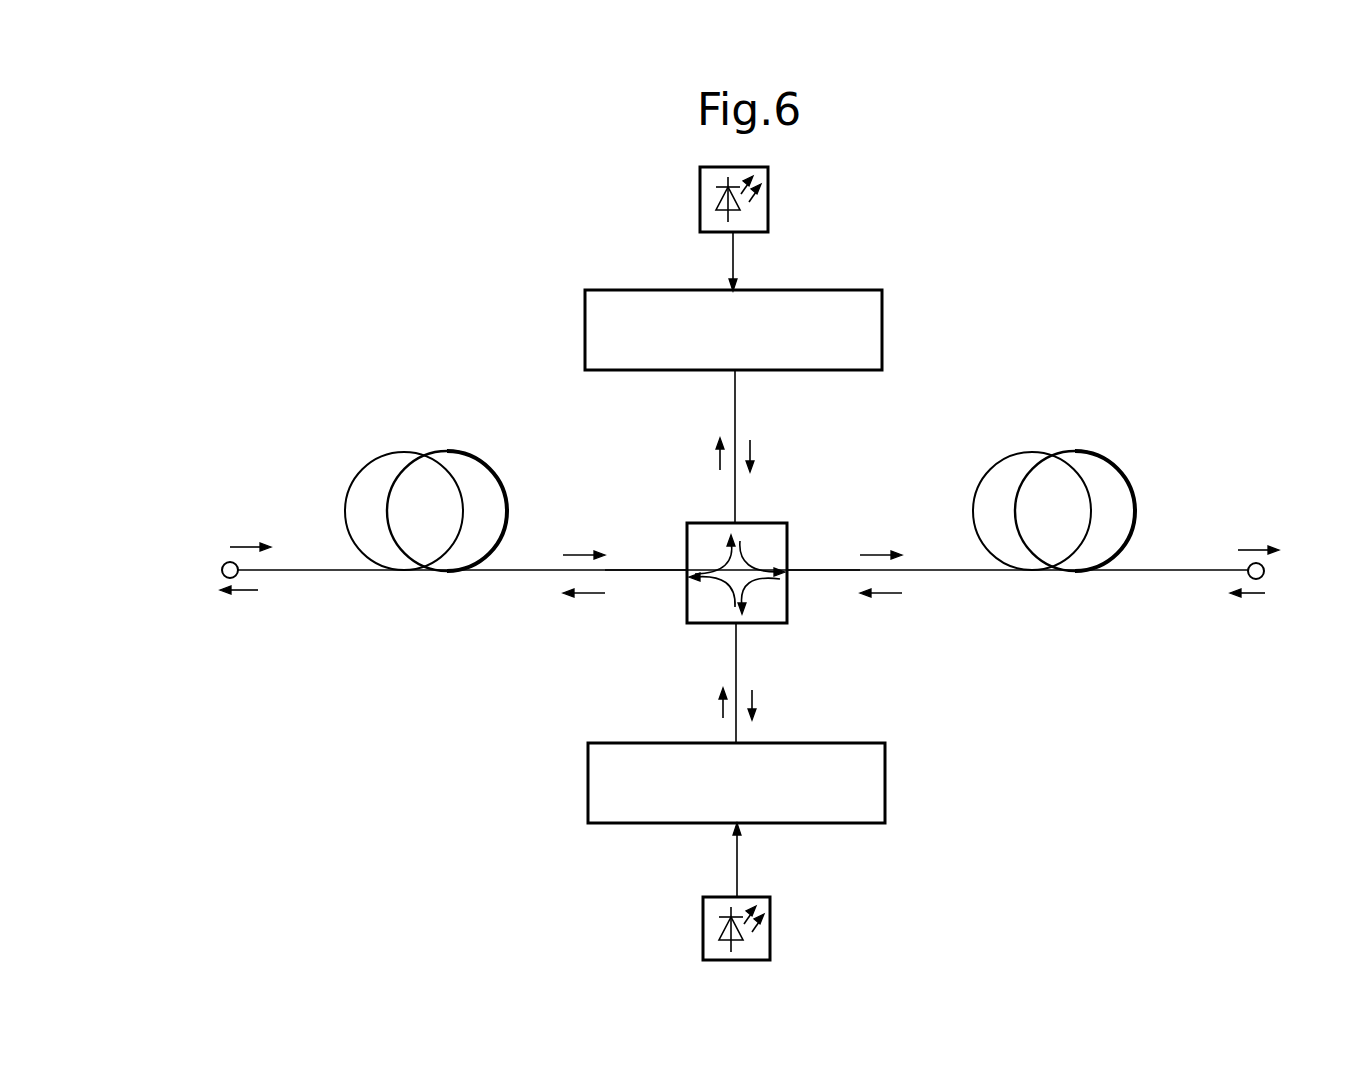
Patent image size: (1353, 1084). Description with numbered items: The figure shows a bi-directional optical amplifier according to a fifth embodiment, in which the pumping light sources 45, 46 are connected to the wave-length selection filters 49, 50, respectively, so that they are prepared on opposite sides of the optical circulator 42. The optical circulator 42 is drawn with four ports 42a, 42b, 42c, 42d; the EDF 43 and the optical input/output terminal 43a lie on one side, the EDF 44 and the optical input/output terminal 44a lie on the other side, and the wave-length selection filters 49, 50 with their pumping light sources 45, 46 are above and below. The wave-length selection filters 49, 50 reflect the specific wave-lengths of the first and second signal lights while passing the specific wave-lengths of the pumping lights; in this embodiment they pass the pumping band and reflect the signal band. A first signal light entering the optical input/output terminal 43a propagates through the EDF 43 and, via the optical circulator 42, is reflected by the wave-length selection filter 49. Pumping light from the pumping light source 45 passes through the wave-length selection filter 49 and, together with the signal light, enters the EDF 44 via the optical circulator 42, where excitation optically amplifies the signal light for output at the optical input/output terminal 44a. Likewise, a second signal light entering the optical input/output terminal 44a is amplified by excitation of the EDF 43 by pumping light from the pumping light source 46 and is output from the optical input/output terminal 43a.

The optical circulator 42 is at (687, 525).
The first port of optical circulator 42a is at (625, 567).
The second port of optical circulator 42b is at (717, 446).
The third port of optical circulator 42c is at (844, 567).
The fourth port of optical circulator 42d is at (756, 683).
The EDF 43 is at (450, 452).
The optical input/output terminal 43a is at (226, 567).
The EDF 44 is at (1073, 453).
The optical input/output terminal 44a is at (1267, 569).
The pumping light source 45 is at (770, 208).
The pumping light source 46 is at (772, 928).
The wave-length selection filter 49 is at (883, 332).
The wave-length selection filter 50 is at (886, 785).